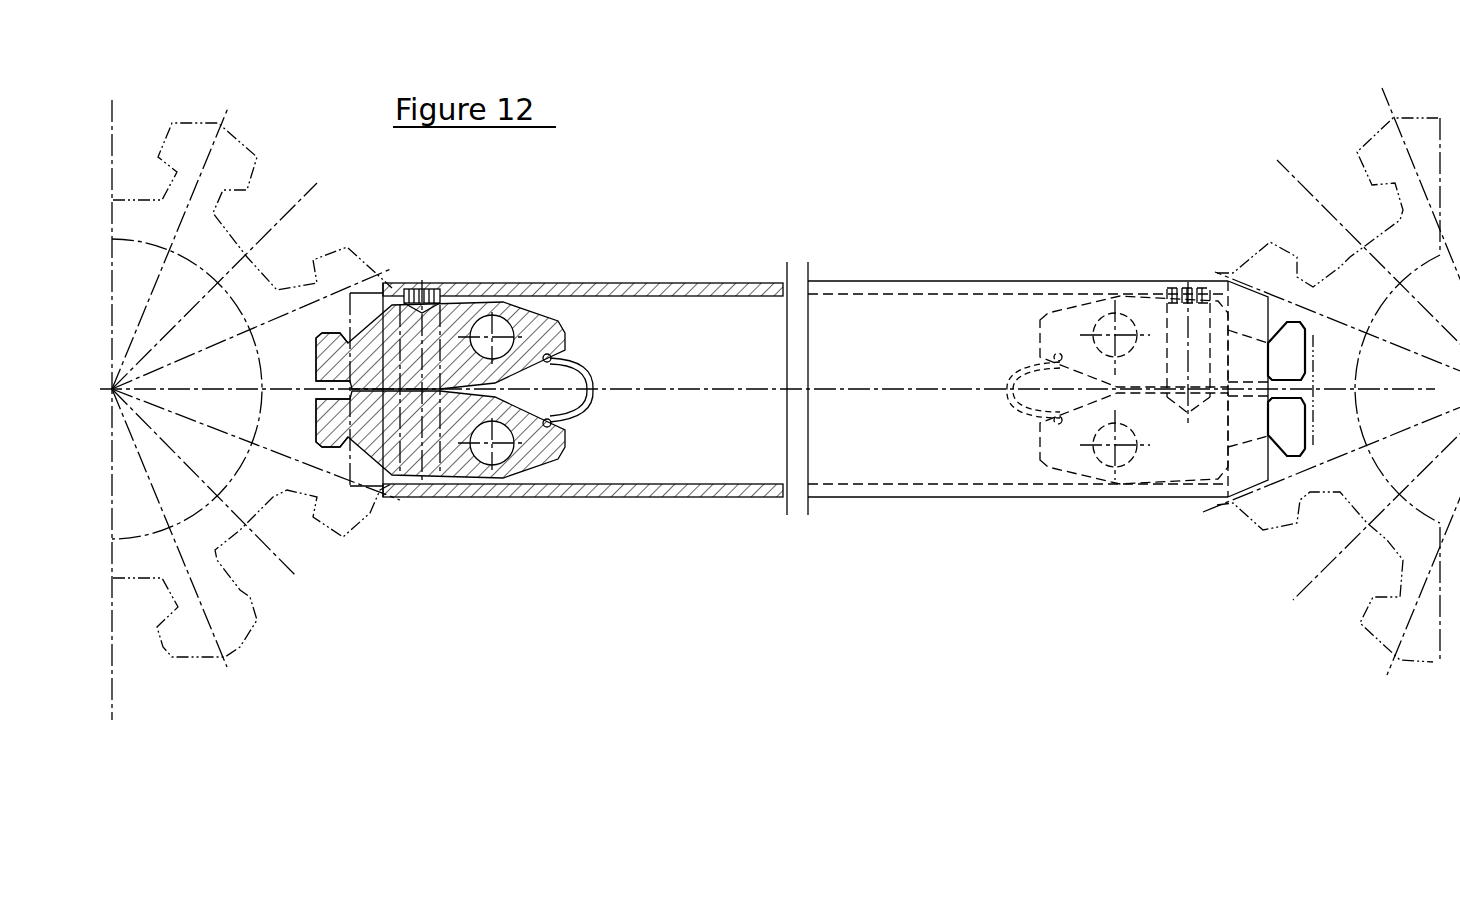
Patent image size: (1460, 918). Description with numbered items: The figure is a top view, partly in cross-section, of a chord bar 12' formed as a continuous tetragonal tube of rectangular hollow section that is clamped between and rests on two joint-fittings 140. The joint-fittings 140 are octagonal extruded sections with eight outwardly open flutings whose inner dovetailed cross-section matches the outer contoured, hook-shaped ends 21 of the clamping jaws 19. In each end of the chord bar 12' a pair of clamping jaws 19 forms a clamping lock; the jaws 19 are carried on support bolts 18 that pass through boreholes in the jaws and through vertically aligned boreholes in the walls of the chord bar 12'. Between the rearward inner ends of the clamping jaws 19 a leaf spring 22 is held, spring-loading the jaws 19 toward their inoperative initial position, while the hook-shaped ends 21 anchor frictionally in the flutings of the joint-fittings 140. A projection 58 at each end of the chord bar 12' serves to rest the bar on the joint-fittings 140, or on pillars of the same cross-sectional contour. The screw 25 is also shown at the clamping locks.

The chord bar 12' is at (805, 439).
The support bolts 18 is at (535, 425).
The clamping jaws 19 is at (463, 377).
The hook-shaped ends 21 is at (333, 418).
The leaf spring 22 is at (568, 413).
The screw 25 is at (412, 300).
The projection 58 is at (367, 318).
The joint-fittings 140 is at (238, 628).